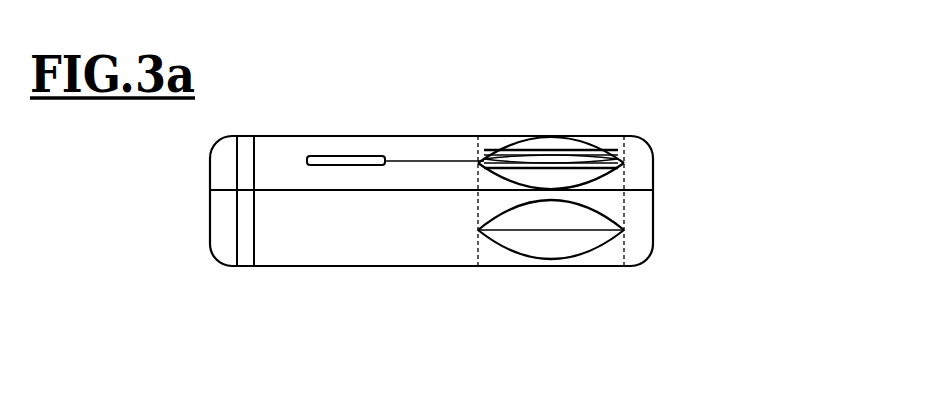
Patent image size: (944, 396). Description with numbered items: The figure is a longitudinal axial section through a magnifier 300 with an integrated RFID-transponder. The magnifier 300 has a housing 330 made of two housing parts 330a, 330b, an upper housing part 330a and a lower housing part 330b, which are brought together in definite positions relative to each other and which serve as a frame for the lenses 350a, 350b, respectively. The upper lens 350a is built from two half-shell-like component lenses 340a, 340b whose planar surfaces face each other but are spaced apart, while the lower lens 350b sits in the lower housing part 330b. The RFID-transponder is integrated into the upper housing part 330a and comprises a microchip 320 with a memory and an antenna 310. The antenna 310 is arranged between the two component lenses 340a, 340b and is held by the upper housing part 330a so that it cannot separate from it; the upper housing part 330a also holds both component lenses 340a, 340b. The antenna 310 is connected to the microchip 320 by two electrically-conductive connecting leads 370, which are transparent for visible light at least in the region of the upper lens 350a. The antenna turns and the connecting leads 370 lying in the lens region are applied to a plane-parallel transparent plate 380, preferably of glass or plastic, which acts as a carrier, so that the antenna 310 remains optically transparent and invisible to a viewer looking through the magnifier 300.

The magnifier 300 is at (276, 156).
The antenna 310 is at (640, 161).
The microchip 320 is at (352, 158).
The housing 330 is at (352, 248).
The upper housing part 330a is at (226, 163).
The lower housing part 330b is at (226, 232).
The first half-shell-like component lens 340a is at (606, 131).
The second half-shell-like component lens 340b is at (611, 169).
The upper lens 350a is at (532, 141).
The lower lens 350b is at (535, 242).
The connecting leads 370 is at (422, 307).
The plane-parallel transparent plate 380 is at (548, 152).